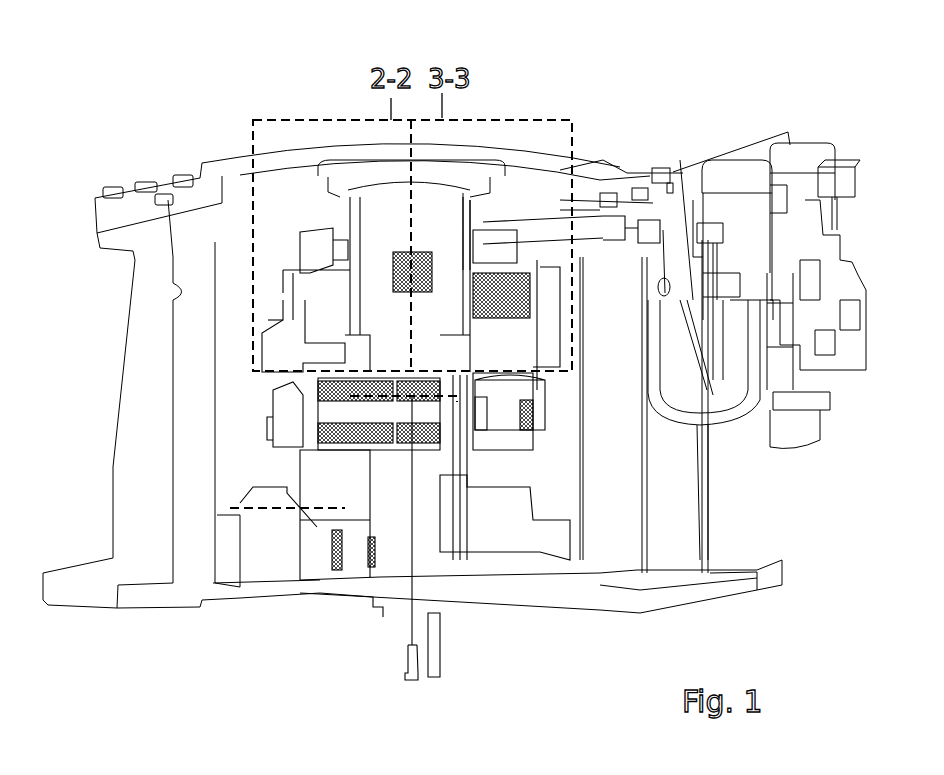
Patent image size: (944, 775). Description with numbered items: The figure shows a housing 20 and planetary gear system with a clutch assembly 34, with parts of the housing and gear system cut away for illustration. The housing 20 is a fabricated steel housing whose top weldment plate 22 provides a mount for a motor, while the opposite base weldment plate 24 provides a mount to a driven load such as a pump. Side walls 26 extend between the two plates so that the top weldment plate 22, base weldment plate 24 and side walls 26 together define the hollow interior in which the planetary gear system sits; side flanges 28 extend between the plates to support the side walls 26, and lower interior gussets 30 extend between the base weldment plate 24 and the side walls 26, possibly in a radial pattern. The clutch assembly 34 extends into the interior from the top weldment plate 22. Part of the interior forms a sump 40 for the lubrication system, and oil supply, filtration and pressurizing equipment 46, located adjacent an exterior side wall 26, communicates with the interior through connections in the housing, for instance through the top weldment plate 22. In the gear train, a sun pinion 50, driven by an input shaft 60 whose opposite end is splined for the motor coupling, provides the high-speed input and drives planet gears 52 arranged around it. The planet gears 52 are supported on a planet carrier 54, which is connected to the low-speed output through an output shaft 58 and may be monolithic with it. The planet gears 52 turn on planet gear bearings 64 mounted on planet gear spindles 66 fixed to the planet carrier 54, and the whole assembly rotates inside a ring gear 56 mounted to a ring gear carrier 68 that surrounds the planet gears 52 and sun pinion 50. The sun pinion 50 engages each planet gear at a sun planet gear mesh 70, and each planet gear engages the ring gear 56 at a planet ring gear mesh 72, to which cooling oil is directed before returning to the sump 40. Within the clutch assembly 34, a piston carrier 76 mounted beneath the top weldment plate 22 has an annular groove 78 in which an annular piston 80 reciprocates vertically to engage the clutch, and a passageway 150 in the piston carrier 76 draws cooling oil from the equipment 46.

The housing 20 is at (660, 132).
The top weldment plate 22 is at (222, 185).
The base weldment plate 24 is at (692, 592).
The side walls 26 is at (627, 525).
The side flanges 28 is at (708, 515).
The lower interior gussets 30 is at (245, 543).
The clutch assembly 34 is at (295, 248).
The sump 40 is at (230, 508).
The oil supply, filtration and pressurizing equipment 46 is at (830, 402).
The sun pinion 50 is at (420, 397).
The planet gears 52 is at (348, 417).
The planet carrier 54 is at (380, 462).
The ring gear 56 is at (508, 402).
The output shaft 58 is at (427, 680).
The input shaft 60 is at (403, 252).
The planet gear bearings 64 is at (480, 417).
The planet gear spindles 66 is at (467, 427).
The ring gear carrier 68 is at (540, 407).
The sun planet gear mesh 70 is at (393, 410).
The planet ring gear mesh 72 is at (318, 418).
The piston carrier 76 is at (272, 220).
The annular groove 78 is at (320, 227).
The piston 80 is at (317, 253).
The passageway 150 is at (590, 218).